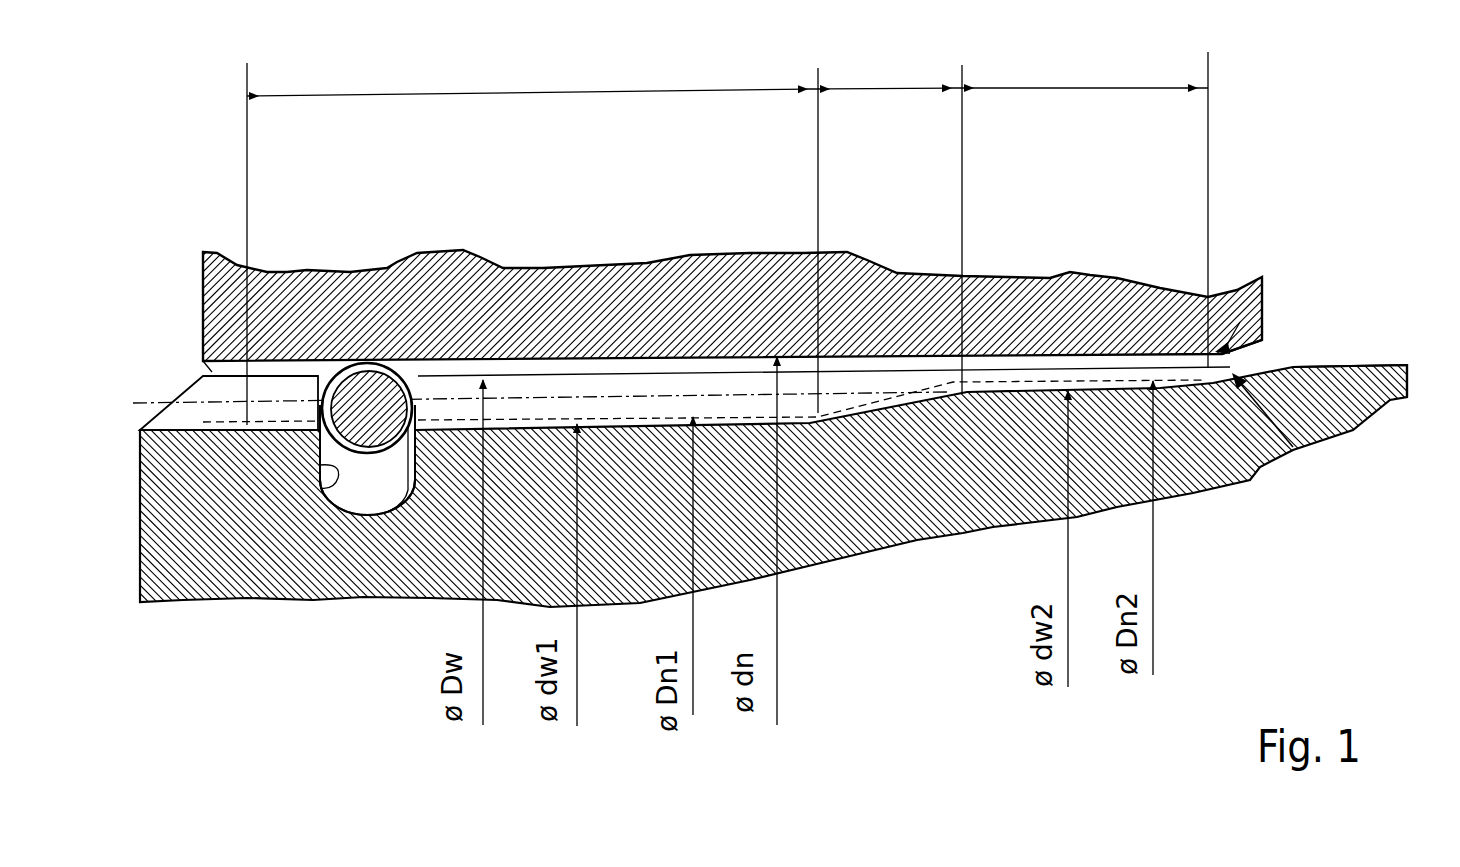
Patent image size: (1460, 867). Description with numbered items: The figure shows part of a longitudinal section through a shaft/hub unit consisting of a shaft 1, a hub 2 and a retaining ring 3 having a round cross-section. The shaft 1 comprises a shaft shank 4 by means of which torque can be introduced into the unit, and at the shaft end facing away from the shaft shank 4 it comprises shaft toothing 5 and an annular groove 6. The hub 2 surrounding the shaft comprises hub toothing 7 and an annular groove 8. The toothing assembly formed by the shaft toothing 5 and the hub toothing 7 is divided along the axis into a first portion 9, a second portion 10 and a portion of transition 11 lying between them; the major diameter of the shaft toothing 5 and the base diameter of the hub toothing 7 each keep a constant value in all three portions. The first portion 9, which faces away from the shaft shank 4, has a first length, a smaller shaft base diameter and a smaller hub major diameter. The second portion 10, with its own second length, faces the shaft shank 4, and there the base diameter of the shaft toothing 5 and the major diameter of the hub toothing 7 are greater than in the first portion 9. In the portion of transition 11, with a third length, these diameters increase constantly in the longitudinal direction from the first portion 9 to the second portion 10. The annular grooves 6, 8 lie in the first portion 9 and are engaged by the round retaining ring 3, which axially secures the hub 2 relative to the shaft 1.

The shaft 1 is at (883, 513).
The hub 2 is at (893, 300).
The retaining ring 3 is at (358, 425).
The shaft shank 4 is at (1345, 420).
The shaft toothing 5 is at (1293, 450).
The annular groove 6 is at (330, 478).
The hub toothing 7 is at (1240, 322).
The annular groove 8 is at (313, 400).
The first portion 9 is at (502, 242).
The second portion 10 is at (1063, 258).
The portion of transition 11 is at (857, 240).